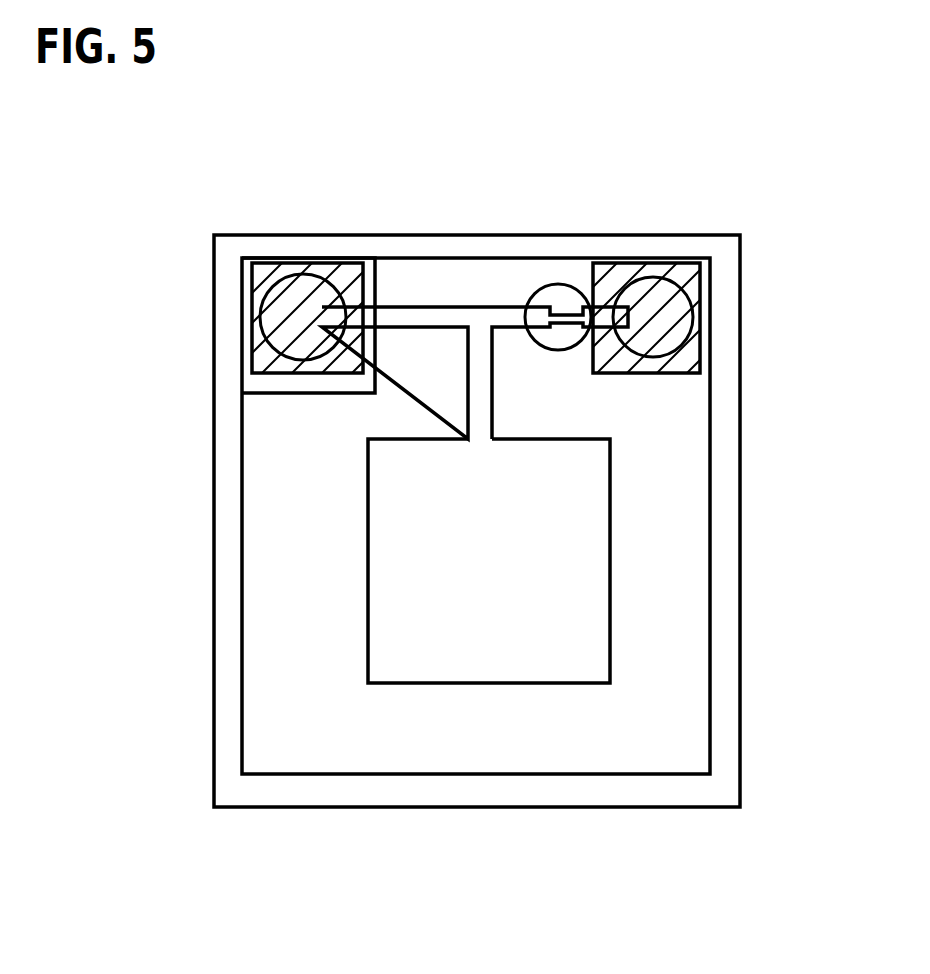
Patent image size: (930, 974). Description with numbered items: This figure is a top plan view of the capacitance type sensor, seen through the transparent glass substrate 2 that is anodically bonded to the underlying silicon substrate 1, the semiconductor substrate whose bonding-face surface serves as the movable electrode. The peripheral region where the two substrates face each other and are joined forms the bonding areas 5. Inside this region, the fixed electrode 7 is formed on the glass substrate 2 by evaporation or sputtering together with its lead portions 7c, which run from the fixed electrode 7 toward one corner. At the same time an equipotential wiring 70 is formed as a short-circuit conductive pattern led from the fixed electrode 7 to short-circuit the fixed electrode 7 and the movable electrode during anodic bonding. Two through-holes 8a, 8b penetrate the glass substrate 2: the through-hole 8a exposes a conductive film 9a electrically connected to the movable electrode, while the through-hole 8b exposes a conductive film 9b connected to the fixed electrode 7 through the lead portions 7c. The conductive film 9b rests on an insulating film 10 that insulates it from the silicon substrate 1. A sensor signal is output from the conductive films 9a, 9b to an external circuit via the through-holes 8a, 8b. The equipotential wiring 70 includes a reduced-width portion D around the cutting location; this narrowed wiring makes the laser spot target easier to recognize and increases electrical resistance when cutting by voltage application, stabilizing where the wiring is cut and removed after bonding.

The silicon substrate 1 is at (400, 521).
The glass substrate 2 is at (212, 658).
The bonding areas 5 is at (727, 505).
The fixed electrode 7 is at (465, 640).
The lead portions 7c is at (471, 255).
The equipotential wiring 70 is at (512, 320).
The reduced-width portion D is at (558, 285).
The through-hole 8a is at (695, 285).
The through-hole 8b is at (258, 279).
The conductive film 9a is at (690, 360).
The conductive film 9b is at (260, 346).
The insulating film 10 is at (300, 382).